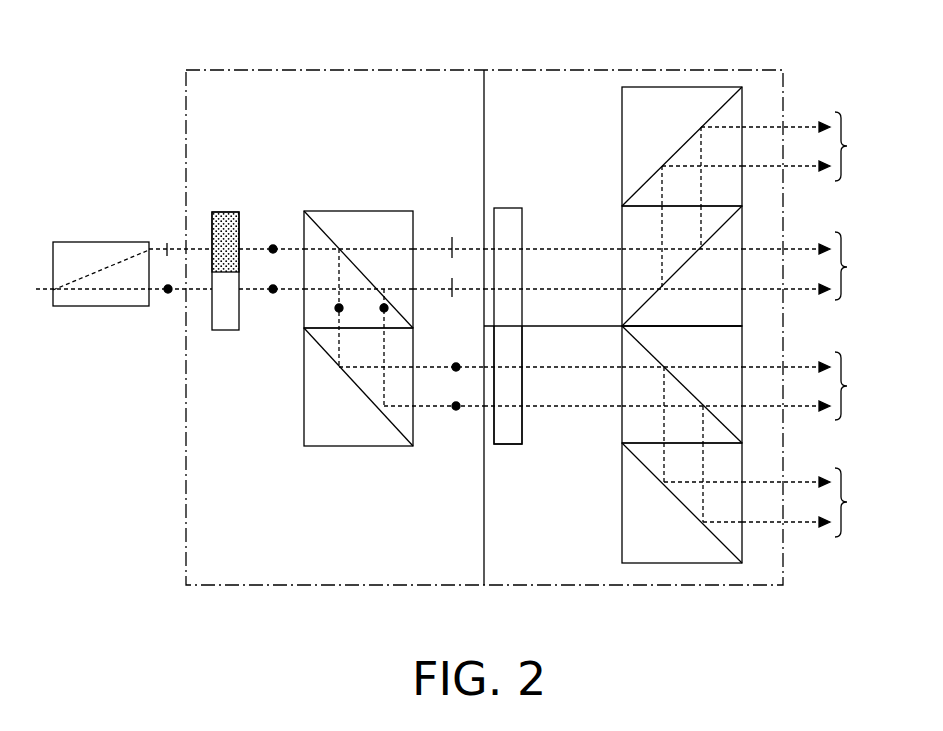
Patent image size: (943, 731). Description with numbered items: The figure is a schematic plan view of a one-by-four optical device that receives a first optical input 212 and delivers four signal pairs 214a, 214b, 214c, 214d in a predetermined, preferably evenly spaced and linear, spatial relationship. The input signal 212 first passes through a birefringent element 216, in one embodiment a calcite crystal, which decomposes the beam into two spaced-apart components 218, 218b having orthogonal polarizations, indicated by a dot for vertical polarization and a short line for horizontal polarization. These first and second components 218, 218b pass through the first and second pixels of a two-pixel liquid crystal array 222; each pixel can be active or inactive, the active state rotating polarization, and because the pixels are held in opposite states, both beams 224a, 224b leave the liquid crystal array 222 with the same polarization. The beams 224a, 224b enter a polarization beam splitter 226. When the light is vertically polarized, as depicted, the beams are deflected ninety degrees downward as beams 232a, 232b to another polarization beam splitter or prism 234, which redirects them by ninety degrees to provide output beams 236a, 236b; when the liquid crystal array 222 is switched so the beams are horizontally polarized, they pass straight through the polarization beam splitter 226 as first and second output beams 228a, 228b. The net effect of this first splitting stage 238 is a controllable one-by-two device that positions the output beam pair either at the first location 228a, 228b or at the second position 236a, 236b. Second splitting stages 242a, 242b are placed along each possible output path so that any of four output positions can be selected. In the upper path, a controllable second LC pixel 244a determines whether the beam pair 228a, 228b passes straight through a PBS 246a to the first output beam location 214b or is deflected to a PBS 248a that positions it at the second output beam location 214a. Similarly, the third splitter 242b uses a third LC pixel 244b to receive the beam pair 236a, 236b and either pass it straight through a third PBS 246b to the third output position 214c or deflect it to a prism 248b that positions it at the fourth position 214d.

The first optical input 212 is at (84, 287).
The second output beam location 214a is at (819, 146).
The first output beam location 214b is at (819, 266).
The third output position 214c is at (819, 386).
The fourth position 214d is at (819, 502).
The birefringent element 216 is at (53, 242).
The first component 218 is at (150, 250).
The second component 218b is at (197, 291).
The liquid crystal array 222 is at (228, 210).
The first beam exiting liquid crystal array 224a is at (253, 243).
The second beam exiting liquid crystal array 224b is at (248, 292).
The polarization beam splitter 226 is at (325, 211).
The first output beam 228a is at (423, 248).
The second output beam 228b is at (430, 292).
The downward deflected beam 232a is at (338, 345).
The downward deflected beam 232b is at (380, 386).
The polarization beam splitter 234 is at (305, 420).
The output beam 236a is at (425, 369).
The output beam 236b is at (473, 406).
The first splitting stage 238 is at (186, 528).
The second splitting stage 242a is at (782, 67).
The third splitter 242b is at (784, 575).
The second LC pixel 244a is at (505, 208).
The third LC pixel 244b is at (512, 444).
The PBS 246a is at (622, 236).
The third PBS 246b is at (622, 420).
The PBS 248a is at (622, 118).
The prism 248b is at (622, 540).